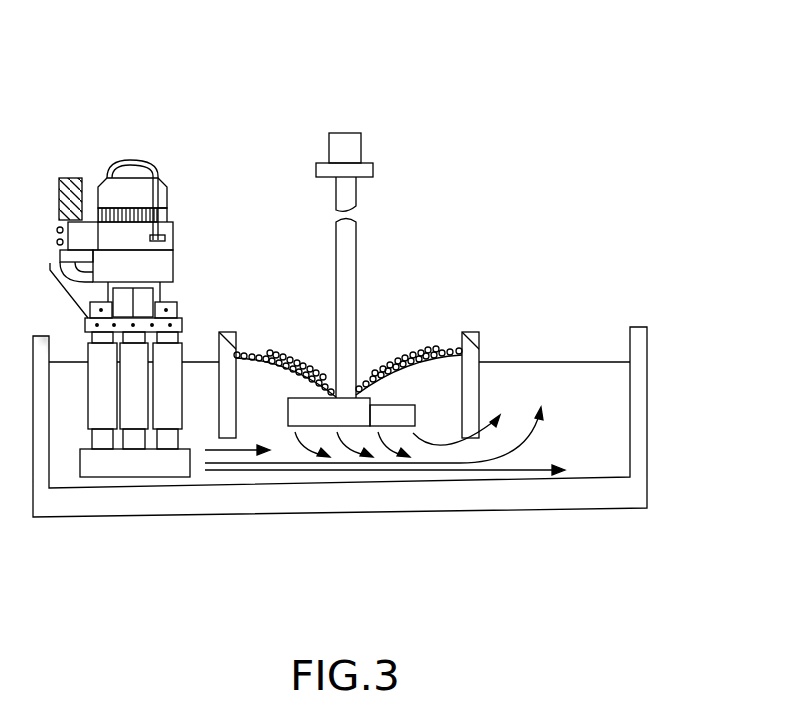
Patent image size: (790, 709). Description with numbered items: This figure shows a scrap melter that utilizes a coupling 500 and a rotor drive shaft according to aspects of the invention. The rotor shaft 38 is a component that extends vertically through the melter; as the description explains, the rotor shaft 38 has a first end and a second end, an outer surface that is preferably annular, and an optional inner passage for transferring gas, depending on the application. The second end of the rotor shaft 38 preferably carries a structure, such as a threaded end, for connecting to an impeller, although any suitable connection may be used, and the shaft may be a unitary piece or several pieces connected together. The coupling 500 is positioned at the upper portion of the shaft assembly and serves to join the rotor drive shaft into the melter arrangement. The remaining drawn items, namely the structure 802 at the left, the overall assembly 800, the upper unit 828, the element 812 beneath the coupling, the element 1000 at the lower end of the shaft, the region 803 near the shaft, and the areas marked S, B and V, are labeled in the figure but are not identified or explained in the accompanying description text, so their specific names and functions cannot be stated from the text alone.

The pump 802 is at (150, 133).
The rotation assembly 800 is at (378, 269).
The motor 828 is at (361, 140).
The coupling 500 is at (316, 168).
The coupling 812 is at (380, 190).
The rotor shaft 38 is at (335, 280).
The platform 1000 is at (440, 399).
The substrate pile 803 is at (367, 318).
The substrates S is at (272, 352).
The bath B is at (81, 397).
The vessel V is at (655, 378).